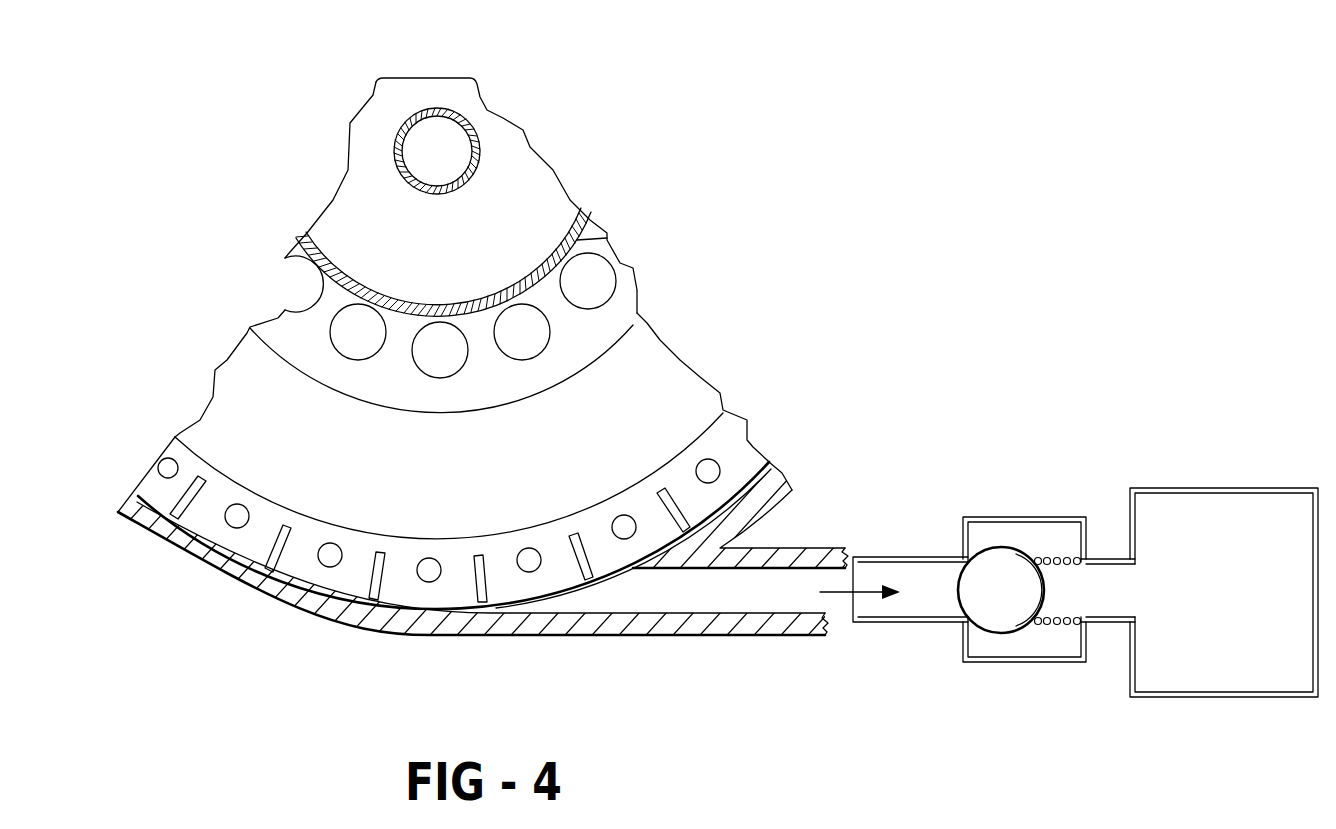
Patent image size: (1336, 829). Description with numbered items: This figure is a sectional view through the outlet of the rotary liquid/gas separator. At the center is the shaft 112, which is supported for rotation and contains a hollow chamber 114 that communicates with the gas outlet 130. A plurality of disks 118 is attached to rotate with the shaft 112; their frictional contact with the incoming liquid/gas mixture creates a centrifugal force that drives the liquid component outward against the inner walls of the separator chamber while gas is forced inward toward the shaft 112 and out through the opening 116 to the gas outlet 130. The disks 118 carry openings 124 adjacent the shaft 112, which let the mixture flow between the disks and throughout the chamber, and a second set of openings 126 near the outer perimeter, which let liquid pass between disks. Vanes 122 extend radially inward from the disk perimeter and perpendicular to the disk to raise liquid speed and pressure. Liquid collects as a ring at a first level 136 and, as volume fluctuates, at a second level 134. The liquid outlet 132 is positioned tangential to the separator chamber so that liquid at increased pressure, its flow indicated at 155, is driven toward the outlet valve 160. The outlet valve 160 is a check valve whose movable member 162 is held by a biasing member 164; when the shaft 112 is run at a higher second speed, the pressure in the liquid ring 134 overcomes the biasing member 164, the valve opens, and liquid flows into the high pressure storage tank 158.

The shaft 112 is at (607, 238).
The hollow chamber 114 is at (520, 163).
The opening 116 is at (440, 292).
The disks 118 is at (248, 370).
The vanes 122 is at (187, 490).
The openings 124 is at (312, 315).
The openings 126 is at (259, 512).
The gas outlet 130 is at (384, 140).
The liquid outlet 132 is at (741, 636).
The liquid ring 134 is at (650, 331).
The liquid ring 136 is at (692, 424).
The fluid flow 155 is at (857, 592).
The high pressure storage tank 158 is at (1198, 672).
The outlet valve 160 is at (931, 653).
The ball 162 is at (1000, 625).
The biasing member 164 is at (1053, 628).